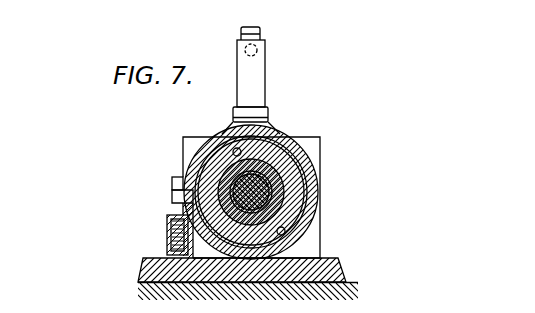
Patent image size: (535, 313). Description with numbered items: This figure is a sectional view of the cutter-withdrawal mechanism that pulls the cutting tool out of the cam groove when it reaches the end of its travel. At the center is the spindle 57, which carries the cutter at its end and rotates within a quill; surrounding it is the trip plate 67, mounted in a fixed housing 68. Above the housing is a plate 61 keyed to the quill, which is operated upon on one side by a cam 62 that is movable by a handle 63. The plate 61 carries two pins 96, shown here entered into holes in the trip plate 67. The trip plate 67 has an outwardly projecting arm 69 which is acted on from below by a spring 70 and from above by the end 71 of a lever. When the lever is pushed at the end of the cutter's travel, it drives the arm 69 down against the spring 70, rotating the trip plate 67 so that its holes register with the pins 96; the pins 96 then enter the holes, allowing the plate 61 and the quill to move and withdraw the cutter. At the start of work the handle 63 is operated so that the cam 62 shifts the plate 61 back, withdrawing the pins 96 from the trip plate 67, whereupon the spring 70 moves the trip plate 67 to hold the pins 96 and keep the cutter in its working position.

The spindle 57 is at (280, 178).
The plate 61 is at (280, 126).
The cam 62 is at (250, 111).
The handle 63 is at (258, 50).
The trip plate 67 is at (264, 190).
The fixed housing 68 is at (293, 146).
The arm 69 is at (178, 197).
The spring 70 is at (170, 242).
The end of lever 71 is at (172, 179).
The pins 96 is at (229, 147).